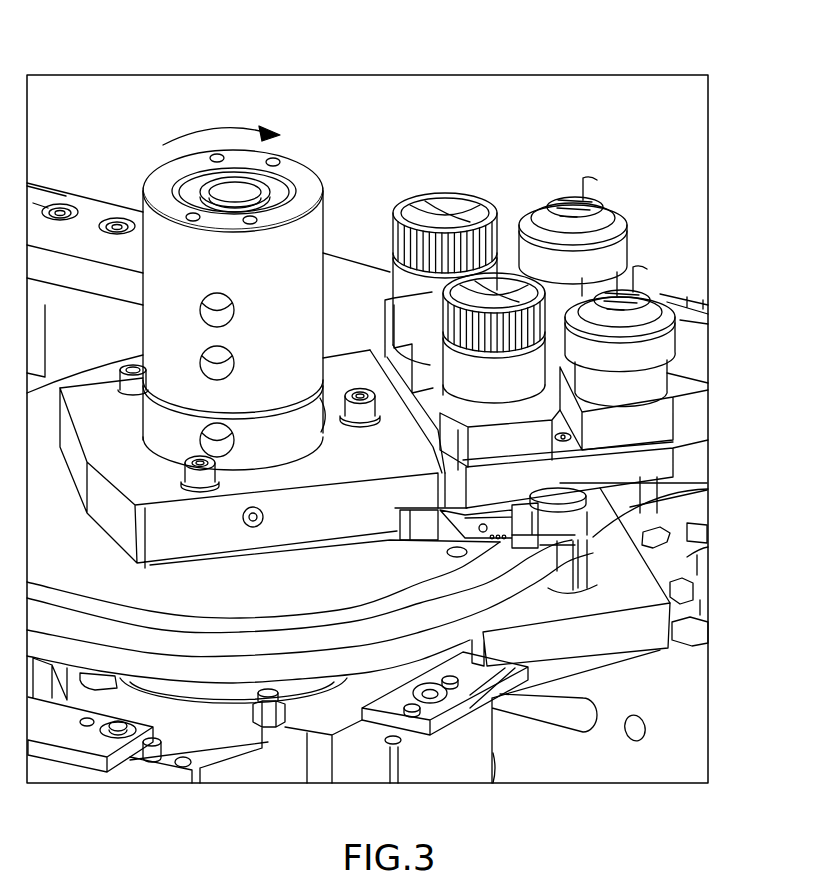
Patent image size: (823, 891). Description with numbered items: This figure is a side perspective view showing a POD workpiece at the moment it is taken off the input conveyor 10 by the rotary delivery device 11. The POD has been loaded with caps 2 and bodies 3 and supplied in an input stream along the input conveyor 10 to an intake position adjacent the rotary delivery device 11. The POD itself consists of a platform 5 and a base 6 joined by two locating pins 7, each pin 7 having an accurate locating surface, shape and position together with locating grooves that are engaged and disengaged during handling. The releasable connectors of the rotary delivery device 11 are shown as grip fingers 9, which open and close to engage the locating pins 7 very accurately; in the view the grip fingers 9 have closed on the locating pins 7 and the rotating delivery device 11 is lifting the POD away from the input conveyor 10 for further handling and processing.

The cap 2 is at (512, 282).
The body 3 is at (627, 224).
The platform 5 is at (672, 462).
The base 6 is at (670, 622).
The locating pin 7 is at (585, 557).
The grip finger 9 is at (593, 578).
The input conveyor 10 is at (87, 237).
The rotary delivery device 11 is at (313, 238).